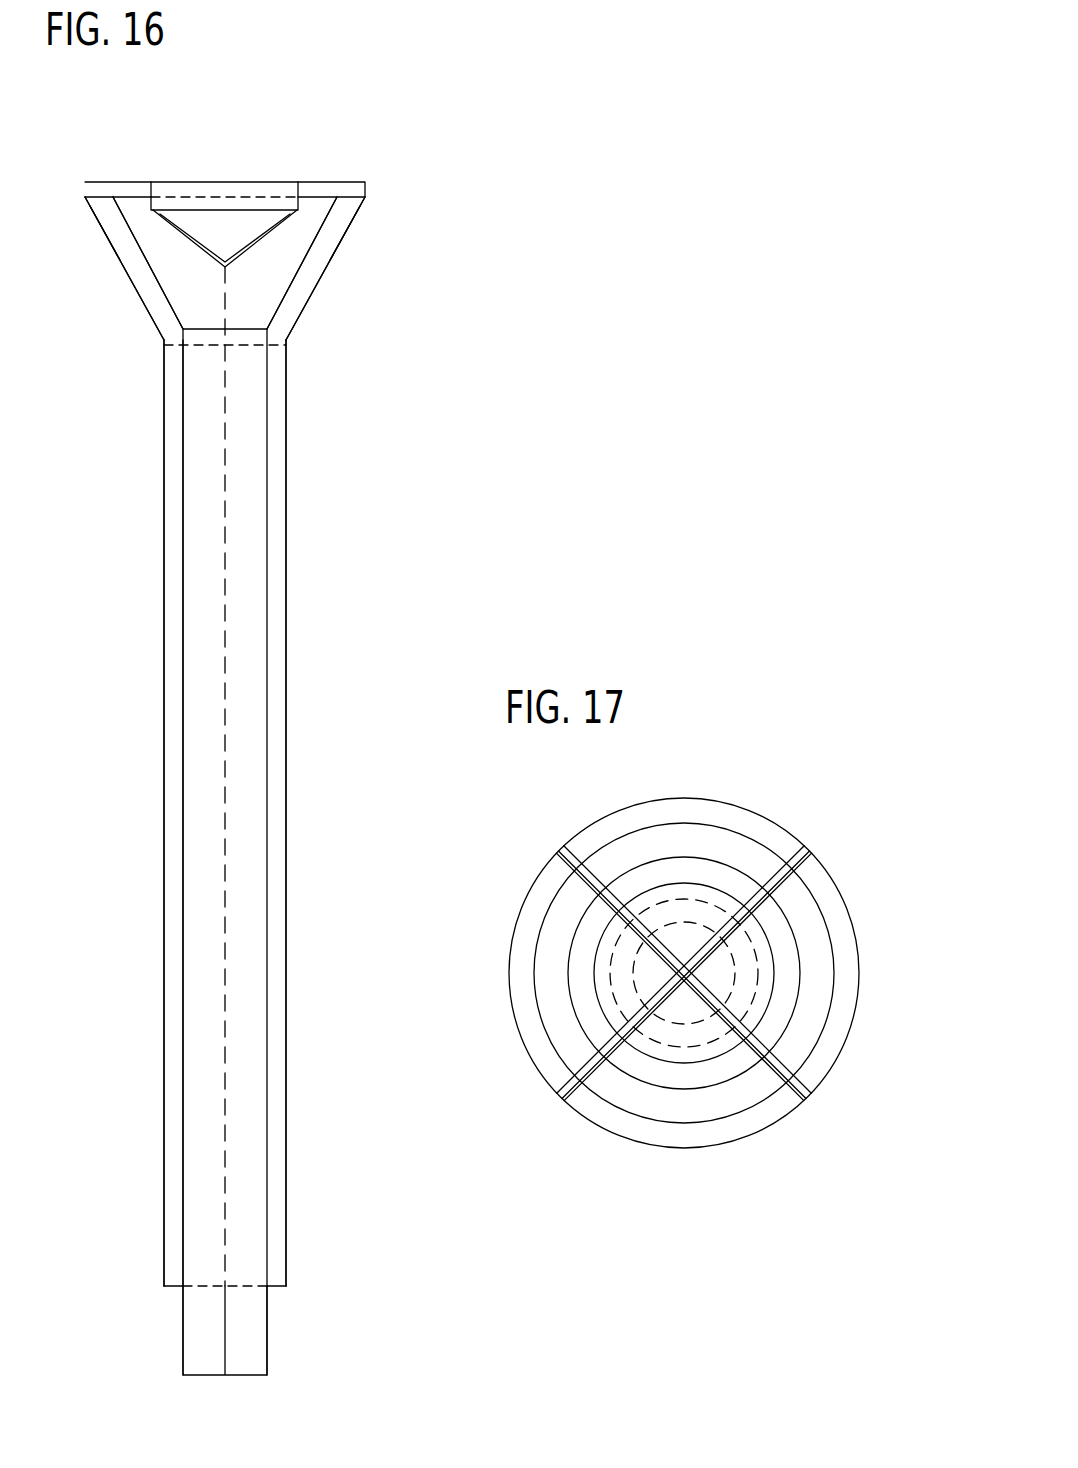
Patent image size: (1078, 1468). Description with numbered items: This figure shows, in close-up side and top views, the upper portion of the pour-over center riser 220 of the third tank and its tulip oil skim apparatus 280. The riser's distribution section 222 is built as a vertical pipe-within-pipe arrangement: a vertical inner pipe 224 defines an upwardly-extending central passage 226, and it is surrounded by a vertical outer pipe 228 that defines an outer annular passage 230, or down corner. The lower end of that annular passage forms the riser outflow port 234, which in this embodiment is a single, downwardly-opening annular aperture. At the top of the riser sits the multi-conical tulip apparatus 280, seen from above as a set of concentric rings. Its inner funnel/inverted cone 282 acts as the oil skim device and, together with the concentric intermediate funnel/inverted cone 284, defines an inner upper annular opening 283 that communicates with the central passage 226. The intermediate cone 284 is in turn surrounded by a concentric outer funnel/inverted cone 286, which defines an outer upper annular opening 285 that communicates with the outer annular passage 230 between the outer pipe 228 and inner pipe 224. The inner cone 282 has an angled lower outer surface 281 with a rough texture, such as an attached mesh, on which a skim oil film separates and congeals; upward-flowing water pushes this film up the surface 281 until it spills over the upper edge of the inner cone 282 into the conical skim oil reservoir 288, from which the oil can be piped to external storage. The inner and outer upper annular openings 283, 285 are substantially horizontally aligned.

In FIG. 16, the center riser 220 is at (128, 643).
In FIG. 16, the distribution section 222 is at (323, 643).
In FIG. 16, the vertical inner pipe 224 is at (267, 1330).
In FIG. 16, the central passage 226 is at (202, 545).
In FIG. 16, the vertical outer pipe 228 is at (287, 532).
In FIG. 16, the outer annular passage 230 is at (175, 828).
In FIG. 16, the riser outflow port 234 is at (176, 1287).
In FIG. 16, the tulip oil skim apparatus 280 is at (443, 163).
In FIG. 16, the angled lower outer surface 281 is at (192, 247).
In FIG. 16, the inner funnel/inverted cone 282 is at (237, 230).
In FIG. 17, the inner funnel/inverted cone 282 is at (565, 987).
In FIG. 16, the inner upper annular opening 283 is at (130, 207).
In FIG. 17, the inner upper annular opening 283 is at (648, 853).
In FIG. 16, the intermediate funnel/inverted cone 284 is at (283, 300).
In FIG. 17, the intermediate funnel/inverted cone 284 is at (718, 823).
In FIG. 16, the outer upper annular opening 285 is at (345, 207).
In FIG. 17, the outer upper annular opening 285 is at (820, 887).
In FIG. 16, the outer funnel/inverted cone 286 is at (103, 232).
In FIG. 17, the outer funnel/inverted cone 286 is at (858, 950).
In FIG. 16, the conical skim oil reservoir 288 is at (235, 190).
In FIG. 17, the conical skim oil reservoir 288 is at (728, 975).